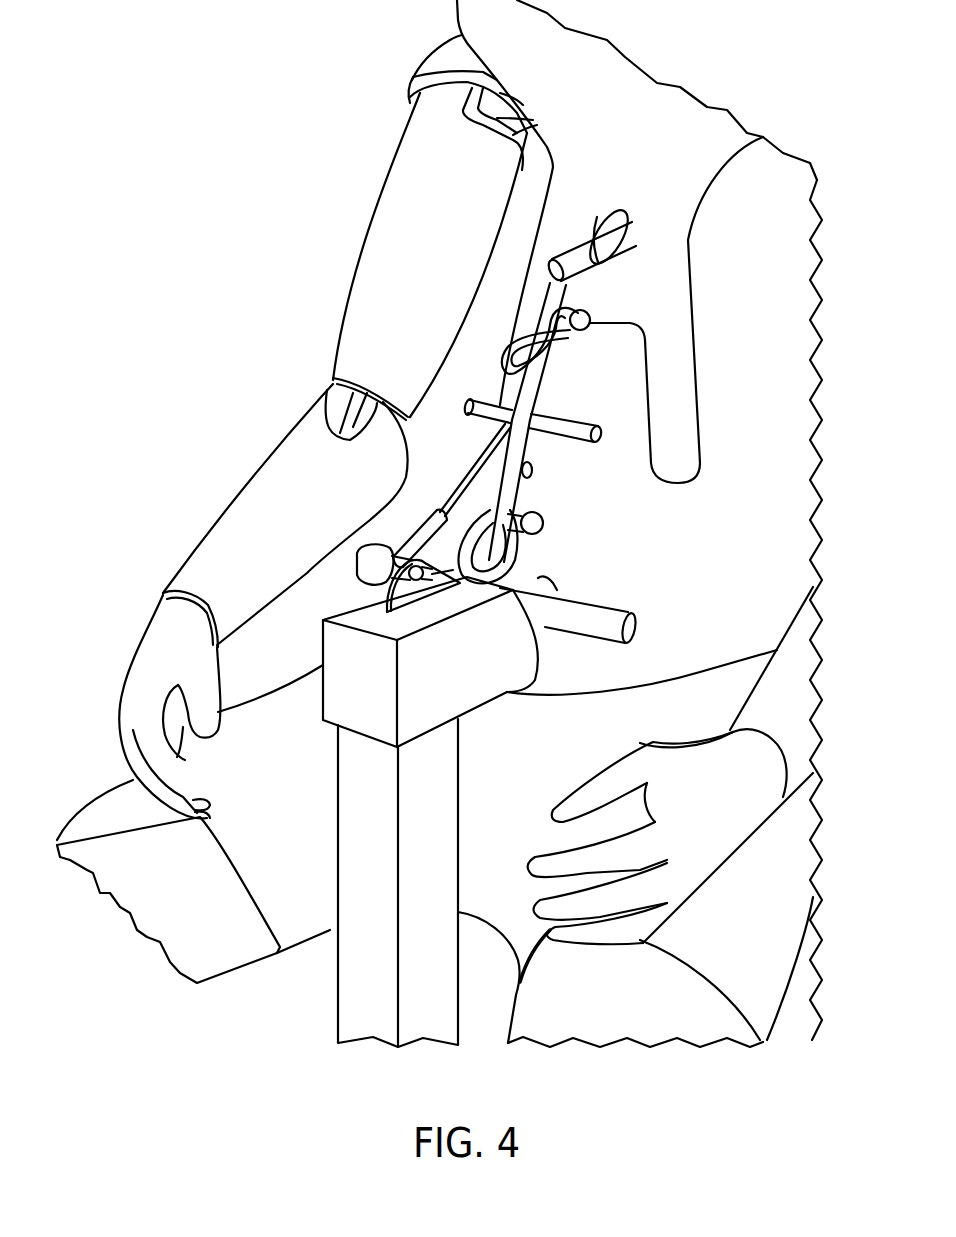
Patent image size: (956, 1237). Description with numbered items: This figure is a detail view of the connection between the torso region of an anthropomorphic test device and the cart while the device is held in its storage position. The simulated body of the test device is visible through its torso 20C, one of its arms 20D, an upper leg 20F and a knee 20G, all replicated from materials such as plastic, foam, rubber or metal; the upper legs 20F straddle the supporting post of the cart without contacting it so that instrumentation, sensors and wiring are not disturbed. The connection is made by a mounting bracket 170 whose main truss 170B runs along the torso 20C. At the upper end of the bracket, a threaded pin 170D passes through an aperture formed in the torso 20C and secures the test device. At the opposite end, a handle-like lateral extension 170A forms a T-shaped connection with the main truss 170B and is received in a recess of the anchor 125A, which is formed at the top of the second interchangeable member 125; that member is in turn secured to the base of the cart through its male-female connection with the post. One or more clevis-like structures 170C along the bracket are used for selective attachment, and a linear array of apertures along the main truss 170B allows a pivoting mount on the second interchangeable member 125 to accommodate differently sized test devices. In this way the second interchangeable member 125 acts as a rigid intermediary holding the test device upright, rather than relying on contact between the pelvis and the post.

The torso 20C is at (658, 117).
The arms 20D is at (352, 280).
The upper leg 20F is at (797, 960).
The knee 20G is at (92, 798).
The second interchangeable member 125 is at (337, 1017).
The anchor 125A is at (500, 695).
The mounting bracket 170 is at (538, 401).
The handle-like lateral extension 170A is at (640, 623).
The main truss 170B is at (543, 455).
The clevis-like structures 170C is at (500, 542).
The threaded pin 170D is at (590, 233).